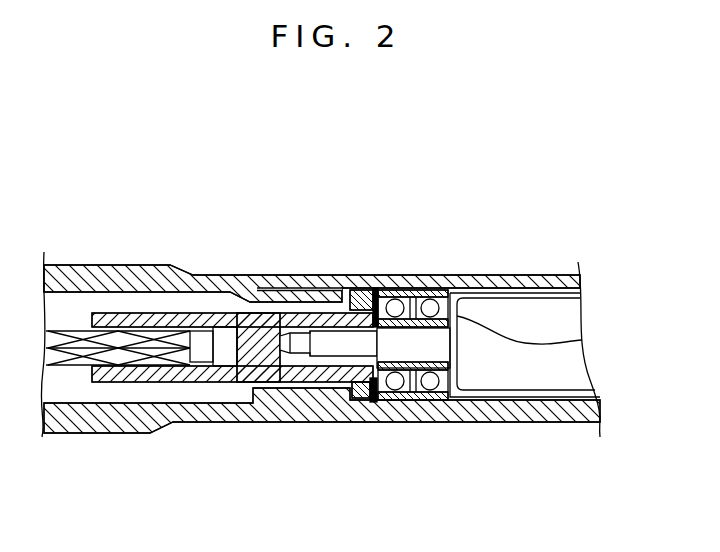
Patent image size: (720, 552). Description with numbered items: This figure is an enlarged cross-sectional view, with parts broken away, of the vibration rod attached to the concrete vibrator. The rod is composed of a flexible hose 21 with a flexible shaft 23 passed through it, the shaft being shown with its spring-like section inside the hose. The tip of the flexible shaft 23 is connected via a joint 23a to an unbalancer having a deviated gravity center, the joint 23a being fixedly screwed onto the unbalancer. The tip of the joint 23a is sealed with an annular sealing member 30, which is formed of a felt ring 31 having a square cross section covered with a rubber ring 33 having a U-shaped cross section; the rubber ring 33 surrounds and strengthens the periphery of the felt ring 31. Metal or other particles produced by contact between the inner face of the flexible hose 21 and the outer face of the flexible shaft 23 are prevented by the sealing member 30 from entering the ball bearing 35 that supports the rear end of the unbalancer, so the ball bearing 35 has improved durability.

The flexible hose 21 is at (203, 272).
The flexible shaft 23 is at (84, 357).
The joint 23a is at (268, 352).
The annular sealing member 30 is at (371, 277).
The felt ring 31 is at (366, 287).
The rubber ring 33 is at (352, 292).
The ball bearing 35 is at (398, 288).